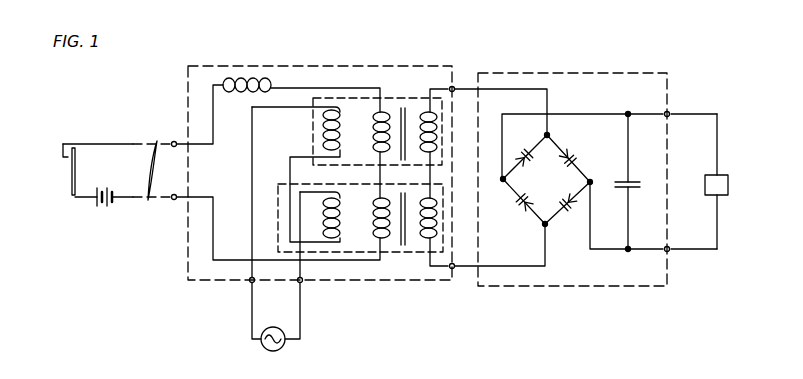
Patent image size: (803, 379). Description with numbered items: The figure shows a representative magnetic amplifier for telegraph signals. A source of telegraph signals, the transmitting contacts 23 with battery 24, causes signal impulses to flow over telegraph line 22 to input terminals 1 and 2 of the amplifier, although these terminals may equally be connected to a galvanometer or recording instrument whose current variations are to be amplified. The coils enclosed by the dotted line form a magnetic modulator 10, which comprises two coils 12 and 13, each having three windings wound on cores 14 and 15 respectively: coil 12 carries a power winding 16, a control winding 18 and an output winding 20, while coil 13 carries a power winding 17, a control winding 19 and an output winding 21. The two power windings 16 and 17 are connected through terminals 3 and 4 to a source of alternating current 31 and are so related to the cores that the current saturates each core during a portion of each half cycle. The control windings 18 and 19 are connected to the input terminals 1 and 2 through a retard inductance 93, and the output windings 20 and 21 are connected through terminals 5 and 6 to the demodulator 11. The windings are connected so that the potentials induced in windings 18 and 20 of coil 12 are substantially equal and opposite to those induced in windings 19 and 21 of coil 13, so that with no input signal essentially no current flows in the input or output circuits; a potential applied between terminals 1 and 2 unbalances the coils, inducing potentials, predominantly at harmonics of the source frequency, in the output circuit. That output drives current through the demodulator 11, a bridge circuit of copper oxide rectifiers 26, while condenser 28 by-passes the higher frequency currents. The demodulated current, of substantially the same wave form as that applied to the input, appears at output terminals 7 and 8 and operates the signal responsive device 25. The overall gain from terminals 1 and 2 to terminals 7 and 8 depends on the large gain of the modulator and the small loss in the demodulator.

The input terminal 1 is at (178, 134).
The input terminal 2 is at (176, 208).
The terminal 3 is at (243, 290).
The terminal 4 is at (305, 291).
The output terminal 5 is at (459, 81).
The output terminal 6 is at (459, 275).
The output terminal 7 is at (676, 106).
The output terminal 8 is at (672, 260).
The magnetic modulator 10 is at (263, 67).
The demodulator 11 is at (552, 73).
The coil 12 is at (313, 130).
The coil 13 is at (278, 216).
The core 14 is at (404, 108).
The core 15 is at (407, 242).
The power winding 16 is at (339, 108).
The power winding 17 is at (337, 240).
The control winding 18 is at (378, 110).
The control winding 19 is at (383, 238).
The output winding 20 is at (436, 110).
The output winding 21 is at (432, 240).
The telegraph line 22 is at (146, 184).
The source of telegraph signals 23 is at (72, 175).
The battery 24 is at (96, 199).
The signal responsive device 25 is at (728, 187).
The copper oxide rectifiers 26 is at (518, 151).
The condenser 28 is at (633, 186).
The source of alternating current 31 is at (264, 347).
The retard inductance 93 is at (241, 78).